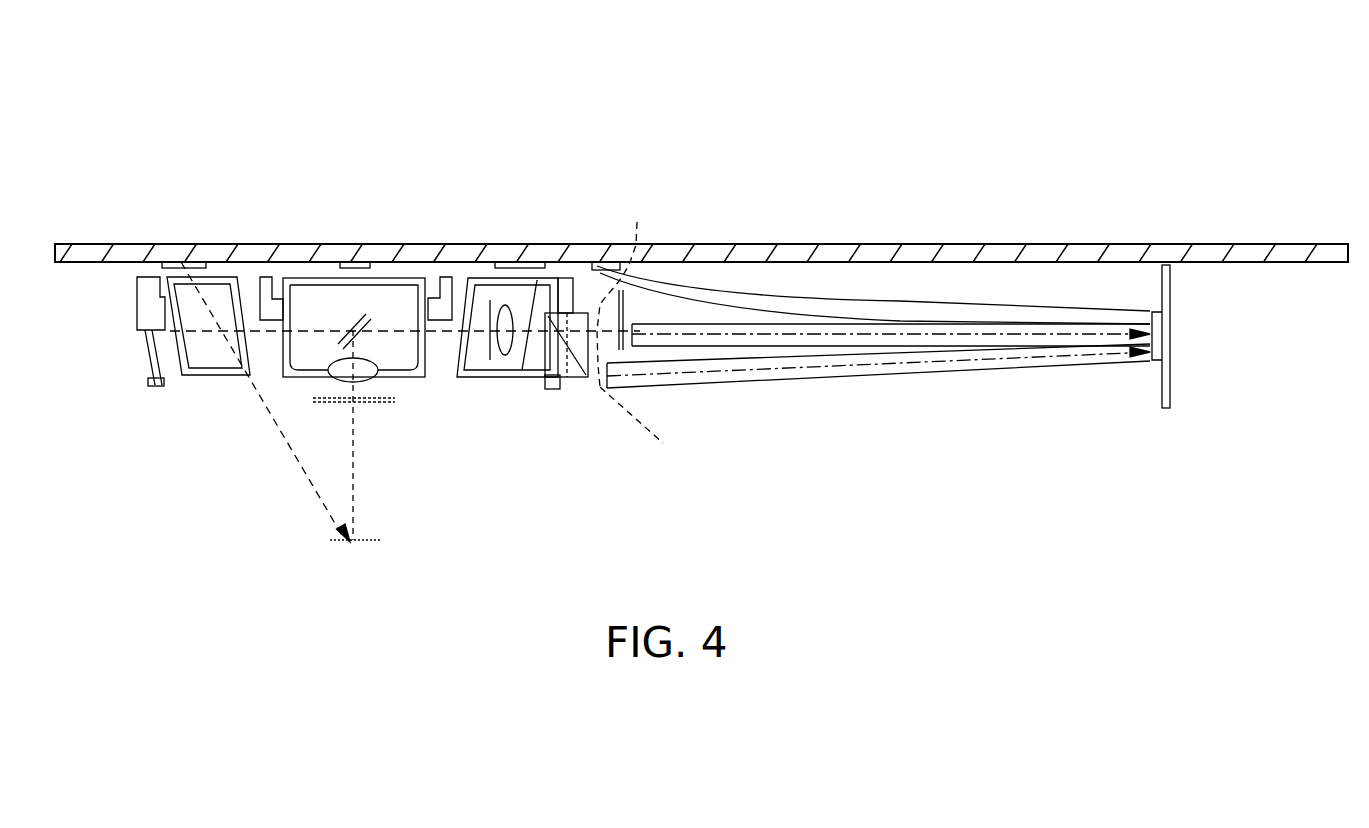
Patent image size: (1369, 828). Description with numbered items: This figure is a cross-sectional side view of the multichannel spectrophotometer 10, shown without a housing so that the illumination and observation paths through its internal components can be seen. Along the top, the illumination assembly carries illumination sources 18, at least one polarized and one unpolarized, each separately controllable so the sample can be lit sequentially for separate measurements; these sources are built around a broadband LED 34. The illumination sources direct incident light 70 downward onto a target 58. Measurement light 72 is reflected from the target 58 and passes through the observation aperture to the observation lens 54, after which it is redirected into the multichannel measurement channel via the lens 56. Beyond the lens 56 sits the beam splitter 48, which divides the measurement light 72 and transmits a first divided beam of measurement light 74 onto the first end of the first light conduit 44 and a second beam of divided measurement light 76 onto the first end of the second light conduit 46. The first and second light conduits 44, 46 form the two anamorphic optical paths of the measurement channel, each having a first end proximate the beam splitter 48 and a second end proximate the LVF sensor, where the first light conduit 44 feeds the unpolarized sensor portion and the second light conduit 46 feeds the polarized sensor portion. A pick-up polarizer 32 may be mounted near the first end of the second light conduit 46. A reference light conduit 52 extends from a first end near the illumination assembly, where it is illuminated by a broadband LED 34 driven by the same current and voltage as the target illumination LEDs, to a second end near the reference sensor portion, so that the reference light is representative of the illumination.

The multichannel spectrophotometer 10 is at (1143, 162).
The illumination source 18 is at (150, 318).
The pick-up polarizer 32 is at (621, 320).
The broadband LED 34 is at (185, 262).
The first light conduit 44 is at (850, 372).
The second light conduit 46 is at (765, 346).
The beam splitter 48 is at (586, 378).
The reference light conduit 52 is at (345, 327).
The observation lens 54 is at (372, 384).
The lens 56 is at (505, 315).
The target 58 is at (365, 542).
The incident light 70 is at (283, 437).
The measurement light 72 is at (362, 478).
The first divided beam of measurement light 74 is at (636, 437).
The second beam of divided measurement light 76 is at (623, 283).